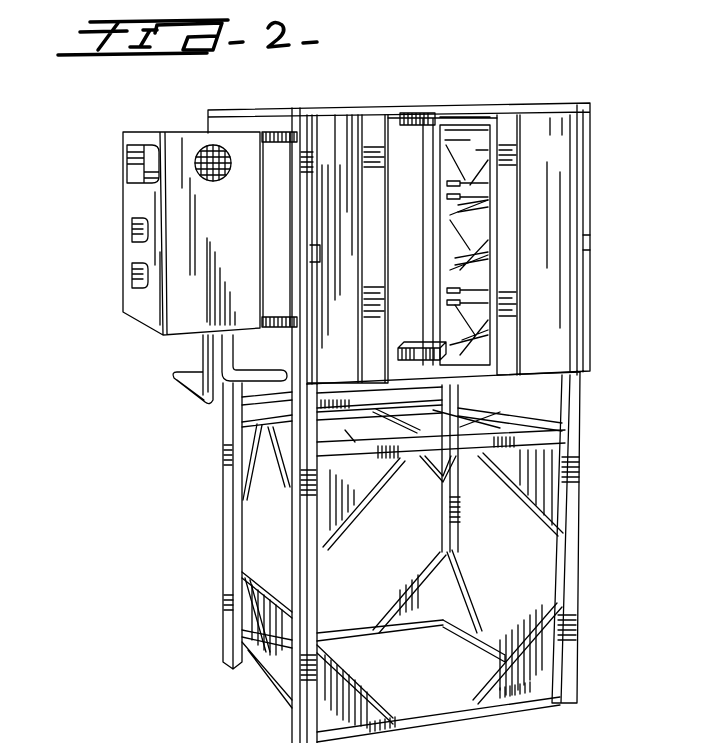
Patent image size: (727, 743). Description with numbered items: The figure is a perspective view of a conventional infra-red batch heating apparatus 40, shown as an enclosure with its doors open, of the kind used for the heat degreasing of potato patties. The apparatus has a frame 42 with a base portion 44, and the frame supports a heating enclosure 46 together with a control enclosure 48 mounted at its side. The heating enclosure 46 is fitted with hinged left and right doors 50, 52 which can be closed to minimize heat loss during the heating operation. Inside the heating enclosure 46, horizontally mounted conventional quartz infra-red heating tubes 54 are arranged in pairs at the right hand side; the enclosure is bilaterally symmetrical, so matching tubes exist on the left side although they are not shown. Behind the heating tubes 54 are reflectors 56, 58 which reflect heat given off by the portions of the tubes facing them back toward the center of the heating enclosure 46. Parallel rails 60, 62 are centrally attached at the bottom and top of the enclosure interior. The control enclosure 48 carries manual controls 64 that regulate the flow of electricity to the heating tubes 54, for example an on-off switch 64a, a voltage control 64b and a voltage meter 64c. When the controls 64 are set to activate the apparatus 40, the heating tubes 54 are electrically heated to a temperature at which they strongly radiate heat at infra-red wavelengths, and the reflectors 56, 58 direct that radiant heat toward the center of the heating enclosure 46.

The batch heating apparatus 40 is at (197, 502).
The frame 42 is at (583, 410).
The base portion 44 is at (578, 600).
The heating enclosure 46 is at (503, 104).
The control enclosure 48 is at (237, 233).
The left door 50 is at (348, 160).
The right door 52 is at (567, 162).
The quartz infra-red heating tubes 54 is at (447, 196).
The reflector 56 is at (458, 210).
The reflector 58 is at (460, 264).
The rail 60 is at (412, 352).
The rail 62 is at (418, 113).
The manual controls 64 is at (62, 310).
The on-off switch 64a is at (124, 165).
The voltage control 64b is at (130, 228).
The voltage meter 64c is at (130, 276).